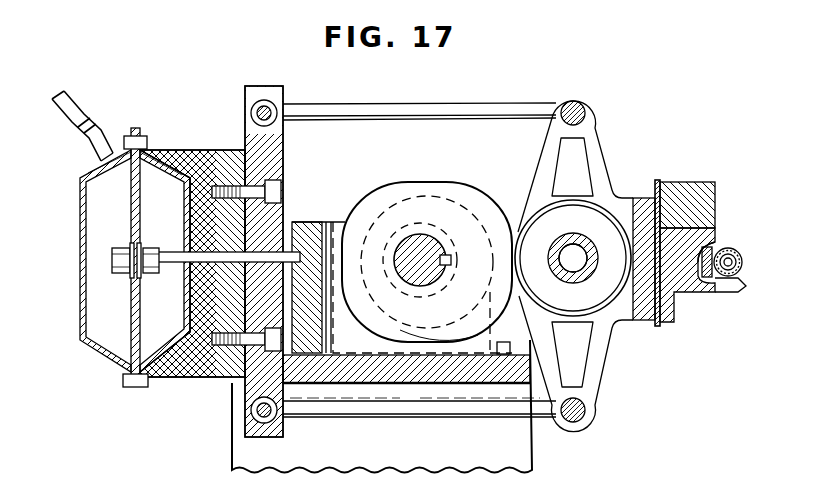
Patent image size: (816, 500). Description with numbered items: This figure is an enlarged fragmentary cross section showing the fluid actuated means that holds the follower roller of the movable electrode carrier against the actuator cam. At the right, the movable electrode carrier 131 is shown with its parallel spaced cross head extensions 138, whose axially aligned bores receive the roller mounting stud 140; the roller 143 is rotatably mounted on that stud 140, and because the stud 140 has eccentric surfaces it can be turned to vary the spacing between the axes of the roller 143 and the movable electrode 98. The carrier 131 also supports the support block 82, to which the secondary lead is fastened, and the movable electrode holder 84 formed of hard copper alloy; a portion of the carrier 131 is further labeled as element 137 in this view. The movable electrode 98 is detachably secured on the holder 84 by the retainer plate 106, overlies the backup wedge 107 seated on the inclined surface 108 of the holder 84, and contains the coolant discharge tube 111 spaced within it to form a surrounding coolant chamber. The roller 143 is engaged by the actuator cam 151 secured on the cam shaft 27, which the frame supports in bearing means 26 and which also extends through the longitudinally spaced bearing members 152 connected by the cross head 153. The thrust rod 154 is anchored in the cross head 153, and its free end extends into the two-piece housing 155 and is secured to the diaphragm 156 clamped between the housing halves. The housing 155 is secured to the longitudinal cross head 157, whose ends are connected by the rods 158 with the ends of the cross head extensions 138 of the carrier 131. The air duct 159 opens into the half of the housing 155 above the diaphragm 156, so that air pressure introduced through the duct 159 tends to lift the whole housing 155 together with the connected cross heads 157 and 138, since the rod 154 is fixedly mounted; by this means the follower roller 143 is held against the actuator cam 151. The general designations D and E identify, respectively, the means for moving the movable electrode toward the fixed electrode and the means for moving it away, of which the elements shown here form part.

The bearing means 26 is at (345, 207).
The cam shaft 27 is at (415, 286).
The support block 82 is at (700, 182).
The movable electrode holder 84 is at (697, 234).
The movable electrode 98 is at (744, 262).
The retainer plate 106 is at (740, 286).
The backup wedge 107 is at (720, 246).
The inclined surface 108 is at (708, 284).
The coolant discharge tube 111 is at (728, 272).
The movable electrode carrier 131 is at (657, 194).
The plate end 137 is at (659, 324).
The cross head extensions 138 is at (597, 148).
The roller mounting stud 140 is at (562, 272).
The roller 143 is at (538, 222).
The actuator cam 151 is at (455, 182).
The bearing members 152 is at (422, 195).
The cross head 153 is at (303, 222).
The thrust rod 154 is at (180, 266).
The two-piece housing 155 is at (150, 150).
The diaphragm 156 is at (131, 219).
The longitudinal cross head 157 is at (245, 145).
The rods 158 is at (443, 98).
The air duct 159 is at (78, 112).
The means for moving the electrode toward the fixed electrode D is at (395, 170).
The means for moving the electrode away from the fixed electrode E is at (75, 284).